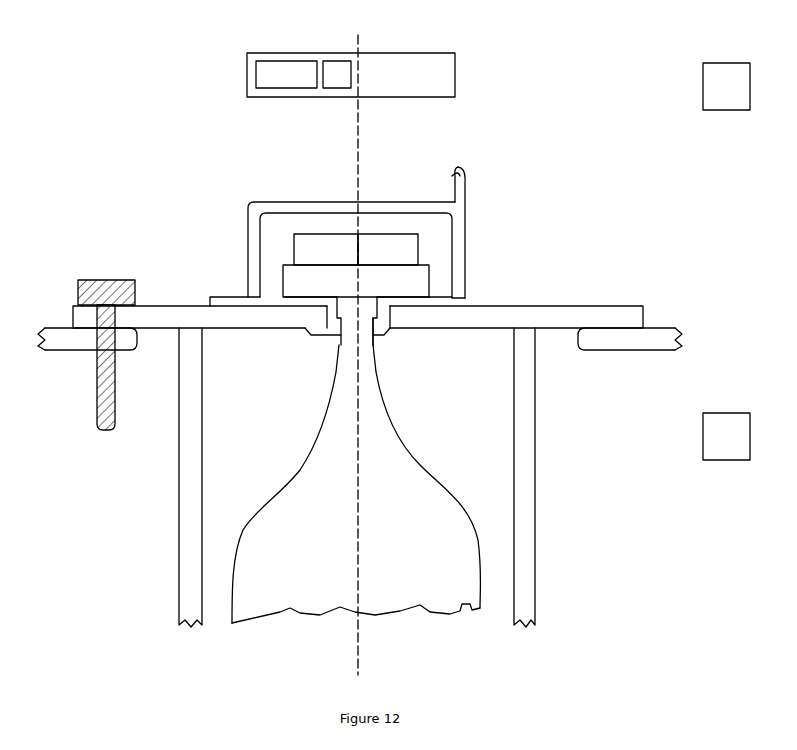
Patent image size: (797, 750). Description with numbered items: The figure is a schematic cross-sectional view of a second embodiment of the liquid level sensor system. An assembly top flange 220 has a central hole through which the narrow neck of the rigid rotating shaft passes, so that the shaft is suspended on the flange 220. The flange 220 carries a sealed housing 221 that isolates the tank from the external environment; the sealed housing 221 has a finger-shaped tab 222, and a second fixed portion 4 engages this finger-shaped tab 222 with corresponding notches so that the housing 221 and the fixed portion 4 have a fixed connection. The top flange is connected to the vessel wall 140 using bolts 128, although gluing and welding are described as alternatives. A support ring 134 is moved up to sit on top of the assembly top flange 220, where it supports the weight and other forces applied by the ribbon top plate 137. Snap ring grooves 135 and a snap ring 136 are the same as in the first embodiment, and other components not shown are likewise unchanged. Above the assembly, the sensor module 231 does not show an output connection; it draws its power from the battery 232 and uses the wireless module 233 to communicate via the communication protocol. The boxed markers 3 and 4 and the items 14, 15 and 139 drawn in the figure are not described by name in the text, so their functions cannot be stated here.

The section view marker 3 is at (726, 436).
The second fixed portion 4 is at (726, 86).
The tube 14 is at (190, 478).
The bell-shaped member 15 is at (296, 588).
The bolts 128 is at (78, 292).
The support ring 134 is at (305, 305).
The snap ring grooves 135 is at (370, 338).
The snap ring 136 is at (330, 331).
The ribbon top plate 137 is at (418, 283).
The magnet 139 is at (415, 253).
The vessel wall 140 is at (75, 350).
The assembly top flange 220 is at (80, 320).
The sealed housing 221 is at (460, 262).
The finger-shaped tab 222 is at (466, 183).
The sensor module 231 is at (443, 73).
The battery 232 is at (272, 72).
The wireless module 233 is at (340, 72).